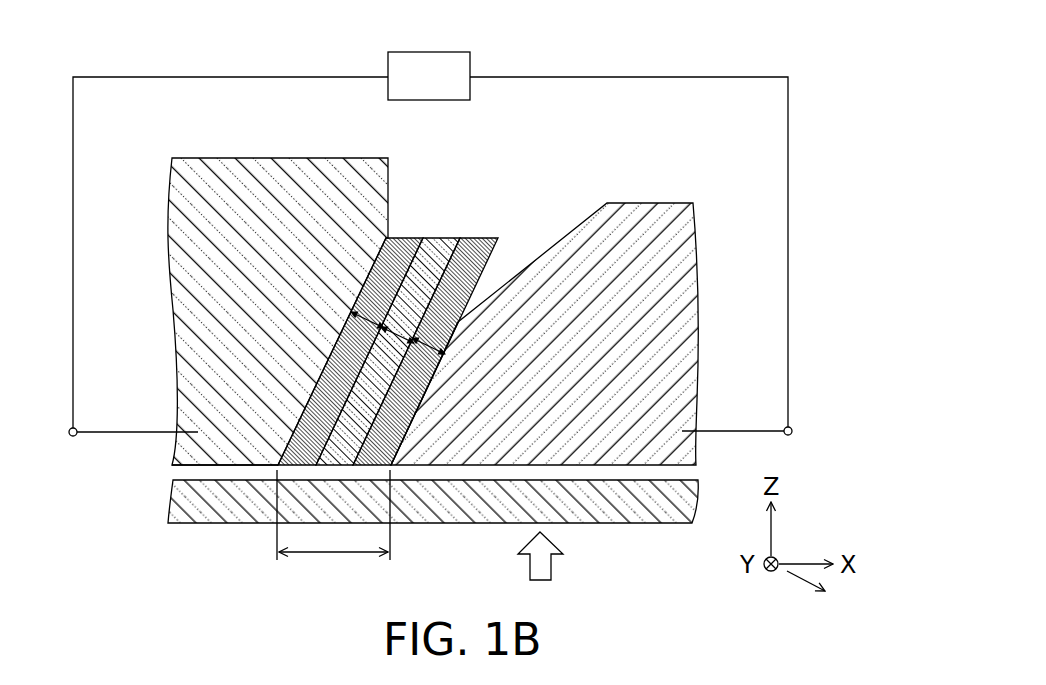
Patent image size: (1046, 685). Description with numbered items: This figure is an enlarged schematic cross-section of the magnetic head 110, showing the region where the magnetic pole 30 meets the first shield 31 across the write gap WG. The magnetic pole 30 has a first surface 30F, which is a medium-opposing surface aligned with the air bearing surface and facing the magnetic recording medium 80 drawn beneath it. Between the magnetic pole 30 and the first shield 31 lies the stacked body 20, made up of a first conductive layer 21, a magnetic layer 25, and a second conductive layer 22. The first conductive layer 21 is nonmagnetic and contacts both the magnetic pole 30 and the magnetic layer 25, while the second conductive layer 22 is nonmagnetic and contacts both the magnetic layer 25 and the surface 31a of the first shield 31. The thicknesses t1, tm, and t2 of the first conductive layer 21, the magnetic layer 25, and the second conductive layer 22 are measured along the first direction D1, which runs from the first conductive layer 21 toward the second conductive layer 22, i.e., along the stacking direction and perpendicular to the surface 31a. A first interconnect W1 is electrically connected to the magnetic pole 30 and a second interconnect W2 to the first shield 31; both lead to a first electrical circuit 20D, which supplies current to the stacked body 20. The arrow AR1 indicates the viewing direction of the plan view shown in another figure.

The magnetic head 110 is at (749, 61).
The first electrical circuit 20D is at (428, 63).
The first interconnect W1 is at (122, 430).
The second interconnect W2 is at (740, 430).
The magnetic pole 30 is at (272, 172).
The first shield 31 is at (650, 230).
The stacked body 20 is at (405, 288).
The first conductive layer 21 is at (400, 253).
The magnetic layer 25 is at (436, 253).
The second conductive layer 22 is at (400, 167).
The thickness of the first conductive layer t1 is at (366, 332).
The thickness of the magnetic layer tm is at (395, 346).
The thickness of the second conductive layer t2 is at (426, 357).
The magnetic recording medium 80 is at (618, 506).
The first surface 30F is at (212, 467).
The write gap WG is at (333, 526).
The surface 31a is at (414, 411).
The arrow AR1 is at (528, 568).
The first direction D1 is at (826, 592).